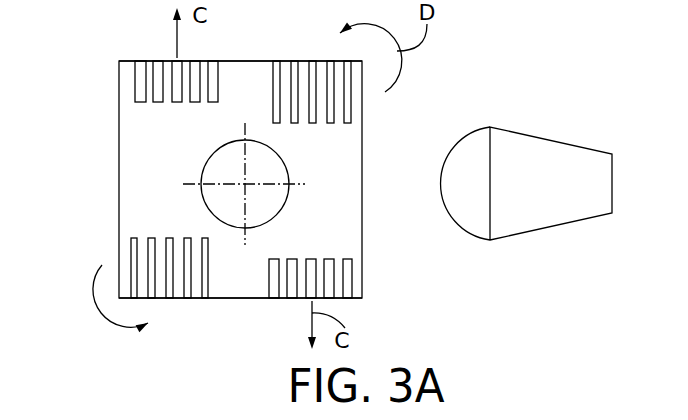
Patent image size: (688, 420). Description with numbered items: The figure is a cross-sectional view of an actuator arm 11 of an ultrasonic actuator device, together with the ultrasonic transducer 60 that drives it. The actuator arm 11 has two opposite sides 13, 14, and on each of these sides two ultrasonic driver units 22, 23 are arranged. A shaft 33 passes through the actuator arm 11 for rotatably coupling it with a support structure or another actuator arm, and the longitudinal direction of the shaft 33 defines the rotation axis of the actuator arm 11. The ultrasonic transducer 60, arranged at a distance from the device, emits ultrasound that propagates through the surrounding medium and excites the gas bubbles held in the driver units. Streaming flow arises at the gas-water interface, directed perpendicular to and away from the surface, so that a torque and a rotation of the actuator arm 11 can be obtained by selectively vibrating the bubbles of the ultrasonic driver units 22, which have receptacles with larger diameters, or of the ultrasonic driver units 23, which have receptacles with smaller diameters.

The actuator arm 11 is at (320, 228).
The first side 13 is at (240, 298).
The second side 14 is at (248, 61).
The ultrasonic driver unit 22 is at (158, 82).
The ultrasonic driver unit 23 is at (350, 98).
The shaft 33 is at (232, 169).
The ultrasonic transducer 60 is at (477, 145).